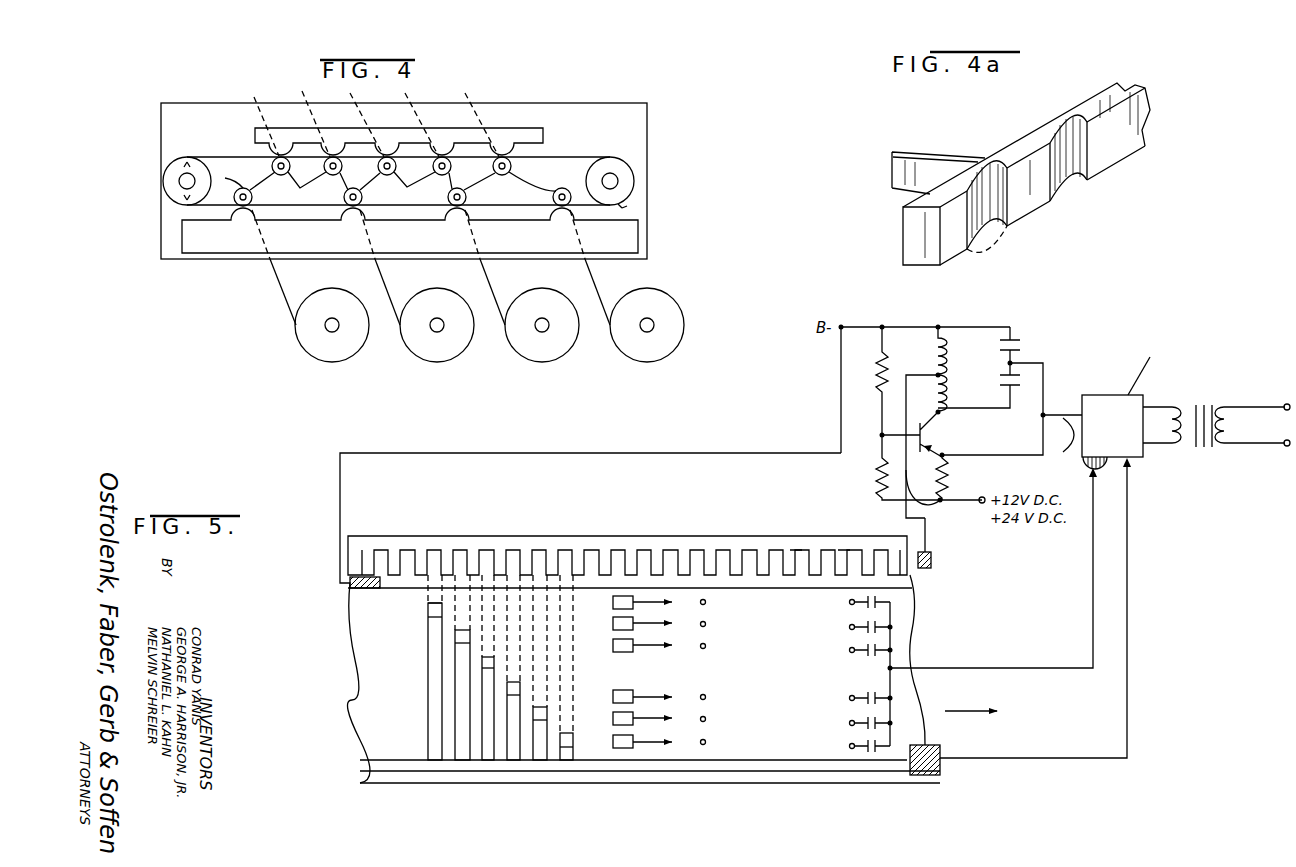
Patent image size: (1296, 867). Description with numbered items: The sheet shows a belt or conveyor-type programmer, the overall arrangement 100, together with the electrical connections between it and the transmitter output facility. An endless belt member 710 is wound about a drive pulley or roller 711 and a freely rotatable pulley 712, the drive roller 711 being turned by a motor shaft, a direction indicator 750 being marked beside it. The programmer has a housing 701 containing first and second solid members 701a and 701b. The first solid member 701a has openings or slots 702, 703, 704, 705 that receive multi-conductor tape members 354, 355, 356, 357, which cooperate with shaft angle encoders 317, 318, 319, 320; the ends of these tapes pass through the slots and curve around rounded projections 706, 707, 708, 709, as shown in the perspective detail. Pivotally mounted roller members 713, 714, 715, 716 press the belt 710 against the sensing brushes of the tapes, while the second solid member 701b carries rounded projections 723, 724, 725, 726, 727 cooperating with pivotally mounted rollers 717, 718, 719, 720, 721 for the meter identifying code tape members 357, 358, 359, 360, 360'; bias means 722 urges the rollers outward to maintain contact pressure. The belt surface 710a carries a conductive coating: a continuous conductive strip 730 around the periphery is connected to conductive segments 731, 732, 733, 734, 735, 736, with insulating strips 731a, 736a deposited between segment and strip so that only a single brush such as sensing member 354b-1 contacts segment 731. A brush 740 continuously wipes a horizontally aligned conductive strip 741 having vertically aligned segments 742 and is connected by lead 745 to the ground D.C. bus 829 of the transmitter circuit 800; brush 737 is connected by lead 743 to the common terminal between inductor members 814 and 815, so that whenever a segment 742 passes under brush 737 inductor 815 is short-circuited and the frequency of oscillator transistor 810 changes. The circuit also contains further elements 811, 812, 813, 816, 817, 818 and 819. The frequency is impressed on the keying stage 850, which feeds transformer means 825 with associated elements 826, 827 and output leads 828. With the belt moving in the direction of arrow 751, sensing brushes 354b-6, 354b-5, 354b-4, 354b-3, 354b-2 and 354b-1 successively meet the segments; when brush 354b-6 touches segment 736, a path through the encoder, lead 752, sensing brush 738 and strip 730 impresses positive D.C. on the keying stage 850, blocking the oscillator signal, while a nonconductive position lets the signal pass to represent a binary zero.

In FIG. 4, the tape transport apparatus 100 is at (252, 355).
In FIG. 4, the housing 701 is at (162, 213).
In FIG. 4, the first solid member 701a is at (192, 252).
In FIG. 4A, the first solid member 701a is at (905, 250).
In FIG. 4, the second solid member 701b is at (399, 132).
In FIG. 4, the opening or slot 702 is at (583, 238).
In FIG. 4, the opening or slot 703 is at (483, 238).
In FIG. 4, the opening or slot 704 is at (381, 238).
In FIG. 4, the opening or slot 705 is at (268, 238).
In FIG. 4, the rounded projection 706 is at (561, 222).
In FIG. 4A, the rounded projection 706 is at (995, 240).
In FIG. 4, the rounded projection 707 is at (463, 222).
In FIG. 4A, the rounded projection 707 is at (1068, 195).
In FIG. 4, the rounded projection 708 is at (352, 222).
In FIG. 4, the rounded projection 709 is at (237, 222).
In FIG. 4, the endless belt member 710 is at (222, 156).
In FIG. 5, the belt surface 710a is at (762, 535).
In FIG. 4, the drive pulley or roller 711 is at (163, 182).
In FIG. 4, the freely rotatable pulley 712 is at (621, 156).
In FIG. 4, the pivotally mounted roller member 713 is at (253, 197).
In FIG. 4, the pivotally mounted roller member 714 is at (363, 197).
In FIG. 4, the pivotally mounted roller member 715 is at (467, 197).
In FIG. 4, the pivotally mounted roller member 716 is at (563, 187).
In FIG. 4, the pivotally mounted roller 717 is at (297, 167).
In FIG. 4, the pivotally mounted roller 718 is at (349, 167).
In FIG. 4, the pivotally mounted roller 719 is at (403, 167).
In FIG. 4, the pivotally mounted roller 720 is at (458, 167).
In FIG. 4, the pivotally mounted roller 721 is at (518, 167).
In FIG. 4, the bias means 722 is at (264, 182).
In FIG. 4, the rounded projection 723 is at (262, 128).
In FIG. 4, the rounded projection 724 is at (347, 134).
In FIG. 4, the rounded projection 725 is at (397, 134).
In FIG. 4, the rounded projection 726 is at (457, 134).
In FIG. 4, the rounded projection 727 is at (516, 134).
In FIG. 5, the conductive strip 730 is at (787, 772).
In FIG. 5, the conductive segment 731 is at (428, 608).
In FIG. 5, the insulating strip 731a is at (428, 665).
In FIG. 5, the conductive segment 732 is at (455, 636).
In FIG. 5, the conductive segment 733 is at (482, 662).
In FIG. 5, the conductive segment 734 is at (507, 688).
In FIG. 5, the conductive segment 735 is at (533, 713).
In FIG. 5, the conductive segment 736 is at (560, 742).
In FIG. 5, the insulating strip 736a is at (570, 752).
In FIG. 5, the brush 737 is at (933, 560).
In FIG. 5, the sensing brush 738 is at (933, 777).
In FIG. 5, the brush 740 is at (352, 590).
In FIG. 5, the conductive strip 741 is at (845, 600).
In FIG. 5, the vertically aligned segments 742 is at (843, 548).
In FIG. 5, the lead 743 is at (954, 503).
In FIG. 5, the lead 745 is at (560, 458).
In FIG. 4, the direction of movement 750 is at (640, 200).
In FIG. 5, the arrow 751 is at (965, 718).
In FIG. 5, the lead 752 is at (1016, 762).
In FIG. 4, the shaft angle encoder 317 is at (667, 350).
In FIG. 4, the shaft angle encoder 318 is at (540, 350).
In FIG. 4, the shaft angle encoder 319 is at (445, 350).
In FIG. 4, the shaft angle encoder 320 is at (345, 350).
In FIG. 4, the multi-conductor tape member 354 is at (602, 282).
In FIG. 4A, the multi-conductor tape member 354 is at (890, 170).
In FIG. 4, the multi-conductor tape member 355 is at (492, 282).
In FIG. 4, the multi-conductor tape member 356 is at (392, 282).
In FIG. 4, the multi-conductor tape member 357 is at (254, 97).
In FIG. 4, the meter identifying code tape member 358 is at (299, 118).
In FIG. 4, the meter identifying code tape member 359 is at (351, 118).
In FIG. 4, the meter identifying code tape member 360 is at (405, 118).
In FIG. 4, the meter identifying code tape member 360' is at (468, 117).
In FIG. 5, the sensing member 354b-1 is at (689, 603).
In FIG. 5, the sensing brush 354b-2 is at (690, 625).
In FIG. 5, the sensing brush 354b-3 is at (690, 647).
In FIG. 5, the sensing brush 354b-4 is at (690, 698).
In FIG. 5, the sensing brush 354b-5 is at (690, 720).
In FIG. 5, the sensing brush 354b-6 is at (690, 743).
In FIG. 5, the transmitter circuit 800 is at (874, 441).
In FIG. 5, the oscillator transistor 810 is at (930, 434).
In FIG. 5, the resistor 811 is at (877, 369).
In FIG. 5, the resistor 812 is at (878, 472).
In FIG. 5, the resistor 813 is at (957, 474).
In FIG. 5, the inductor member 814 is at (948, 400).
In FIG. 5, the inductor member 815 is at (948, 360).
In FIG. 5, the capacitor 816 is at (1028, 345).
In FIG. 5, the capacitor 817 is at (1028, 380).
In FIG. 5, the lead 818 is at (1008, 455).
In FIG. 5, the lead 819 is at (1053, 450).
In FIG. 5, the transformer means 825 is at (1205, 402).
In FIG. 5, the primary winding 826 is at (1180, 405).
In FIG. 5, the secondary winding 827 is at (1224, 448).
In FIG. 5, the output leads 828 is at (1275, 425).
In FIG. 5, the ground D.C. bus 829 is at (916, 326).
In FIG. 5, the keying stage 850 is at (1108, 395).